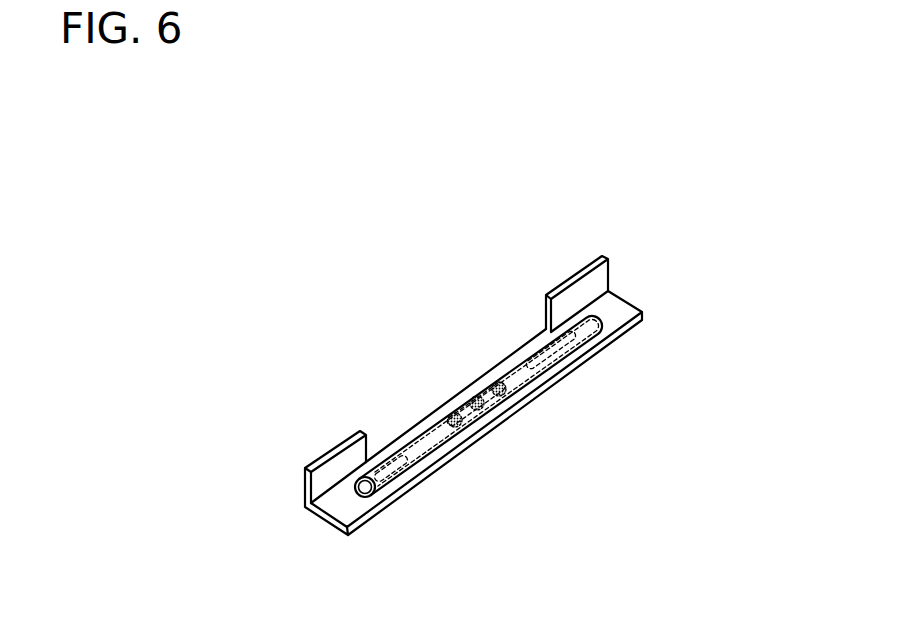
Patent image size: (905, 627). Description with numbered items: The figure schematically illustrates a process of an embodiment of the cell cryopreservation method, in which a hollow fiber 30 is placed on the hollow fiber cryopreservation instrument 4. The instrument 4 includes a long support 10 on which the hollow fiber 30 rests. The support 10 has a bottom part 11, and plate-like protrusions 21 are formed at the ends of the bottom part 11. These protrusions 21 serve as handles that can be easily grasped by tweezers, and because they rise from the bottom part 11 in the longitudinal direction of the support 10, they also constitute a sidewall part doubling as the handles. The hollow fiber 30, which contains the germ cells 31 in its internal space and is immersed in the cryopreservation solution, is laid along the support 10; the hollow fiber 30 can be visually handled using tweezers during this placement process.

The hollow fiber cryopreservation instrument 4 is at (527, 354).
The support 10 is at (541, 372).
The bottom part 11 is at (610, 317).
The plate-like protrusions 21 is at (595, 282).
The hollow fiber 30 is at (430, 441).
The germ cells 31 is at (493, 377).